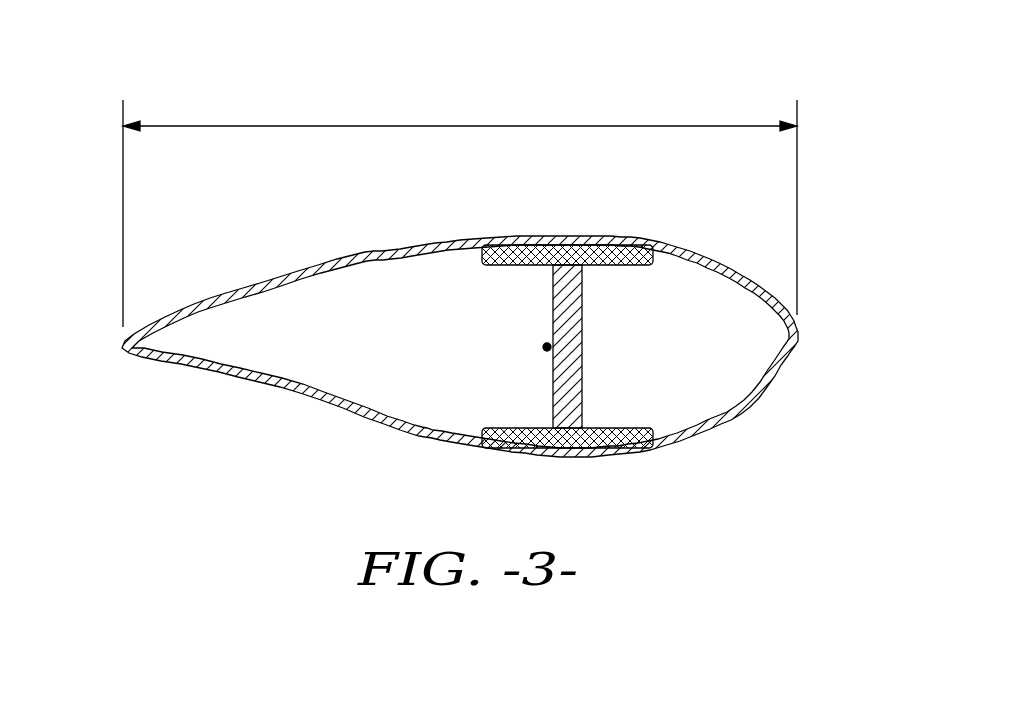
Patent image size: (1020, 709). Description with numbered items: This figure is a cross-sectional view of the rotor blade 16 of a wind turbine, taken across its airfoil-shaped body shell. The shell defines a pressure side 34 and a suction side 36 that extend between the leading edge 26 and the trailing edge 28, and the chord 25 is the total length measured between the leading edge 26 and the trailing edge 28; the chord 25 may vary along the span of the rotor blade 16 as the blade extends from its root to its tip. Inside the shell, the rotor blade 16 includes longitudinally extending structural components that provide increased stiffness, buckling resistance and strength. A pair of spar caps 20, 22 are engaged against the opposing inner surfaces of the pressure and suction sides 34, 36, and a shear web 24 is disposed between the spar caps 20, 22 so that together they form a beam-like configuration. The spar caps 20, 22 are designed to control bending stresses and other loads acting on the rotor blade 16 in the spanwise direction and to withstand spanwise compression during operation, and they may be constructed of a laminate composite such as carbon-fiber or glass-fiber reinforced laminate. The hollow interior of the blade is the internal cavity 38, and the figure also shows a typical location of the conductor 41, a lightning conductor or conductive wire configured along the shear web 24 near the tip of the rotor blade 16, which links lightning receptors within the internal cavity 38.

The rotor blade 16 is at (715, 90).
The spar cap 20 is at (606, 247).
The spar cap 22 is at (610, 452).
The shear web 24 is at (582, 392).
The chord 25 is at (347, 125).
The leading edge 26 is at (800, 337).
The trailing edge 28 is at (120, 347).
The pressure side 34 is at (352, 420).
The suction side 36 is at (353, 257).
The internal cavity 38 is at (402, 352).
The conductor 41 is at (545, 347).